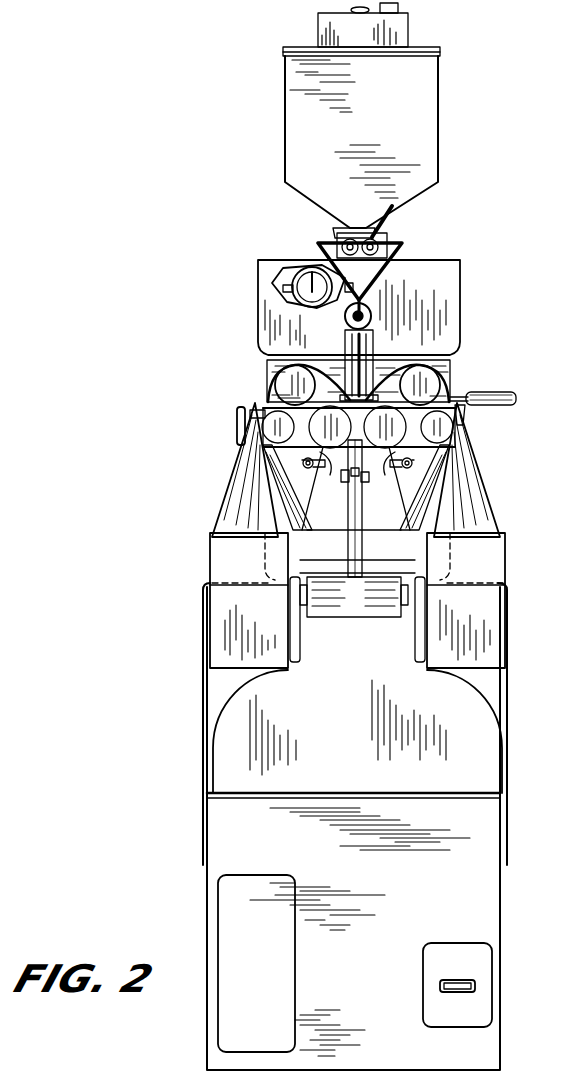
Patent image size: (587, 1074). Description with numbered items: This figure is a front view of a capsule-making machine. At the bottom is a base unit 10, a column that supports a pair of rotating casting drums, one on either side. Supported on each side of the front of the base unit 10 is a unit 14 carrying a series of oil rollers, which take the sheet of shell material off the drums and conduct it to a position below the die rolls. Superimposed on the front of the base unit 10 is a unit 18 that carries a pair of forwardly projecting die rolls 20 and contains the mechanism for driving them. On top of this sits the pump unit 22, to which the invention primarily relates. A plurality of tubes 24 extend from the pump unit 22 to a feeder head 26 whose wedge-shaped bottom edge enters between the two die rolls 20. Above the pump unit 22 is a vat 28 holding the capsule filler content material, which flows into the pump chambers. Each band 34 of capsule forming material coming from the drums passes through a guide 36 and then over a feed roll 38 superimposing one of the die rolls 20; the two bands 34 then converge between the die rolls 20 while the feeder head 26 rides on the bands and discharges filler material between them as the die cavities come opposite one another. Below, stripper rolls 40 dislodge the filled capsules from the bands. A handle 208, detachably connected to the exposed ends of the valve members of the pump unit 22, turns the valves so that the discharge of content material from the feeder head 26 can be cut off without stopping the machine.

The base unit 10 is at (495, 907).
The unit carrying oil rollers 14 is at (215, 624).
The die roll unit 18 is at (455, 373).
The die rolls 20 is at (324, 463).
The pump unit 22 is at (445, 308).
The tubes 24 is at (394, 263).
The feeder head 26 is at (343, 372).
The vat 28 is at (420, 149).
The band of capsule forming material 34 is at (242, 523).
The guide 36 is at (252, 410).
The feed roll 38 is at (272, 366).
The stripper rolls 40 is at (347, 480).
The handle 208 is at (384, 232).